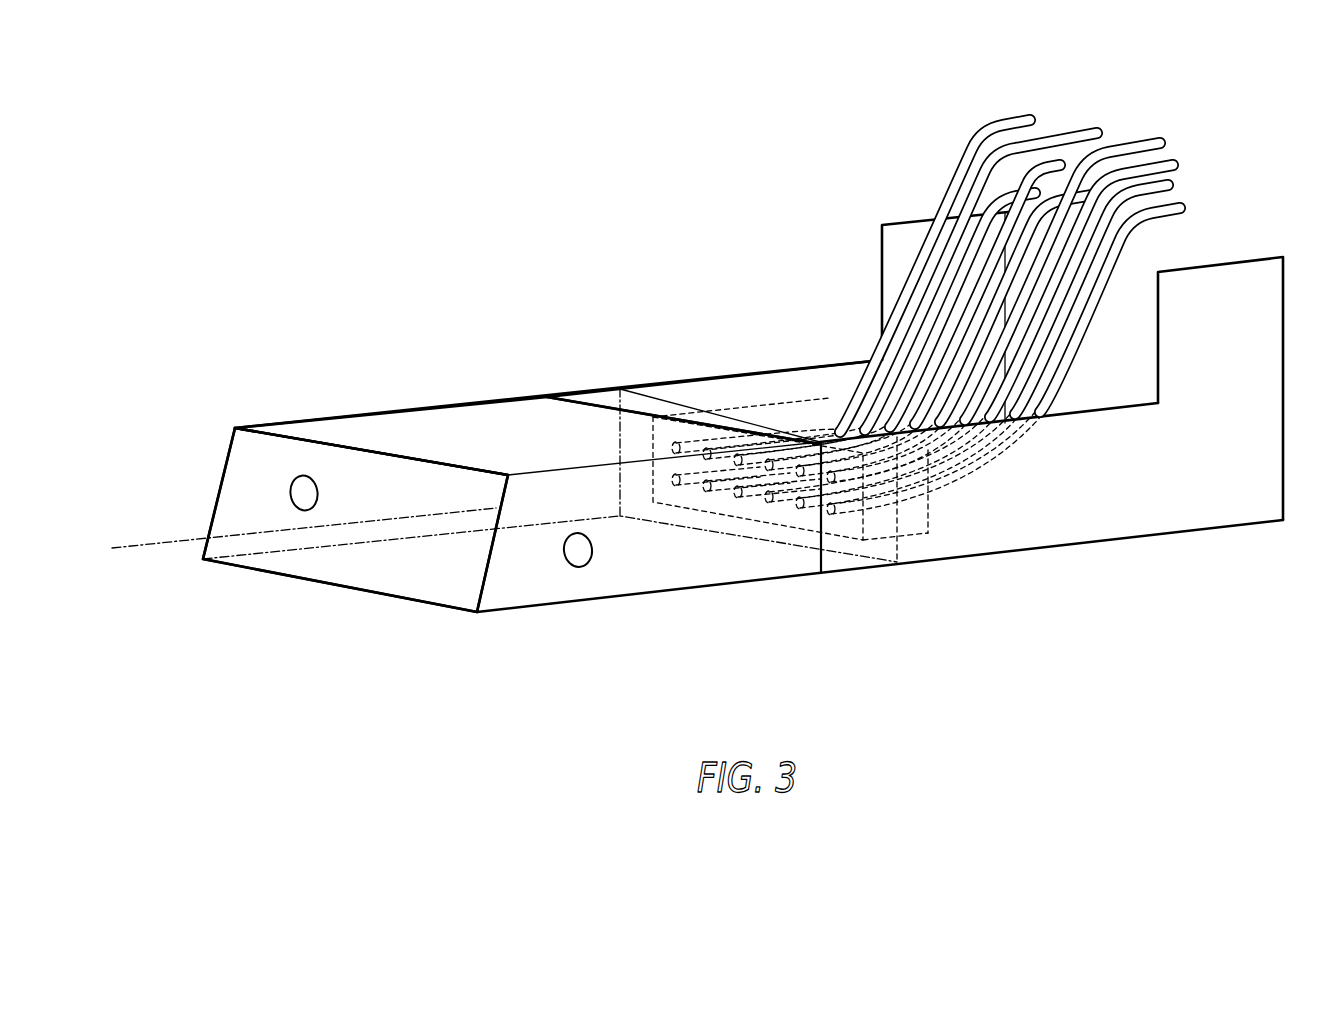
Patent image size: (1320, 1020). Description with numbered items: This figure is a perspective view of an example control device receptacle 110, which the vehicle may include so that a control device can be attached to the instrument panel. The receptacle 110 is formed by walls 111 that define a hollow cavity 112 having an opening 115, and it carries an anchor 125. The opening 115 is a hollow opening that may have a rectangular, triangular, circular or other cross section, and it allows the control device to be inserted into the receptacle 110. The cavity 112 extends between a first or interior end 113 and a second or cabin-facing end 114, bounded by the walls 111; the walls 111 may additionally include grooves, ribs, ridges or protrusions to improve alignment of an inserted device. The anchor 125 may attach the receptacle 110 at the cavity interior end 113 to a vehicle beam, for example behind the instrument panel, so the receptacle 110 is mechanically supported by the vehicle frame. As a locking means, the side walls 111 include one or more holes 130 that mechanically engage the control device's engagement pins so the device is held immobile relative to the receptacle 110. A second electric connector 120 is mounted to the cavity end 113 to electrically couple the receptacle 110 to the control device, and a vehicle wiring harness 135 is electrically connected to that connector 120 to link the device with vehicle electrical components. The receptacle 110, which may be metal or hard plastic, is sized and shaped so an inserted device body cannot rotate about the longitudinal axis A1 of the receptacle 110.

The receptacle 110 is at (693, 383).
The walls 111 is at (253, 504).
The cavity 112 is at (457, 404).
The interior end 113 is at (692, 399).
The cabin-facing end 114 is at (288, 432).
The opening 115 is at (361, 562).
The second electric connector 120 is at (908, 519).
The anchor 125 is at (1185, 478).
The holes 130 is at (301, 494).
The wiring harness 135 is at (985, 140).
The longitudinal axis A1 is at (288, 534).